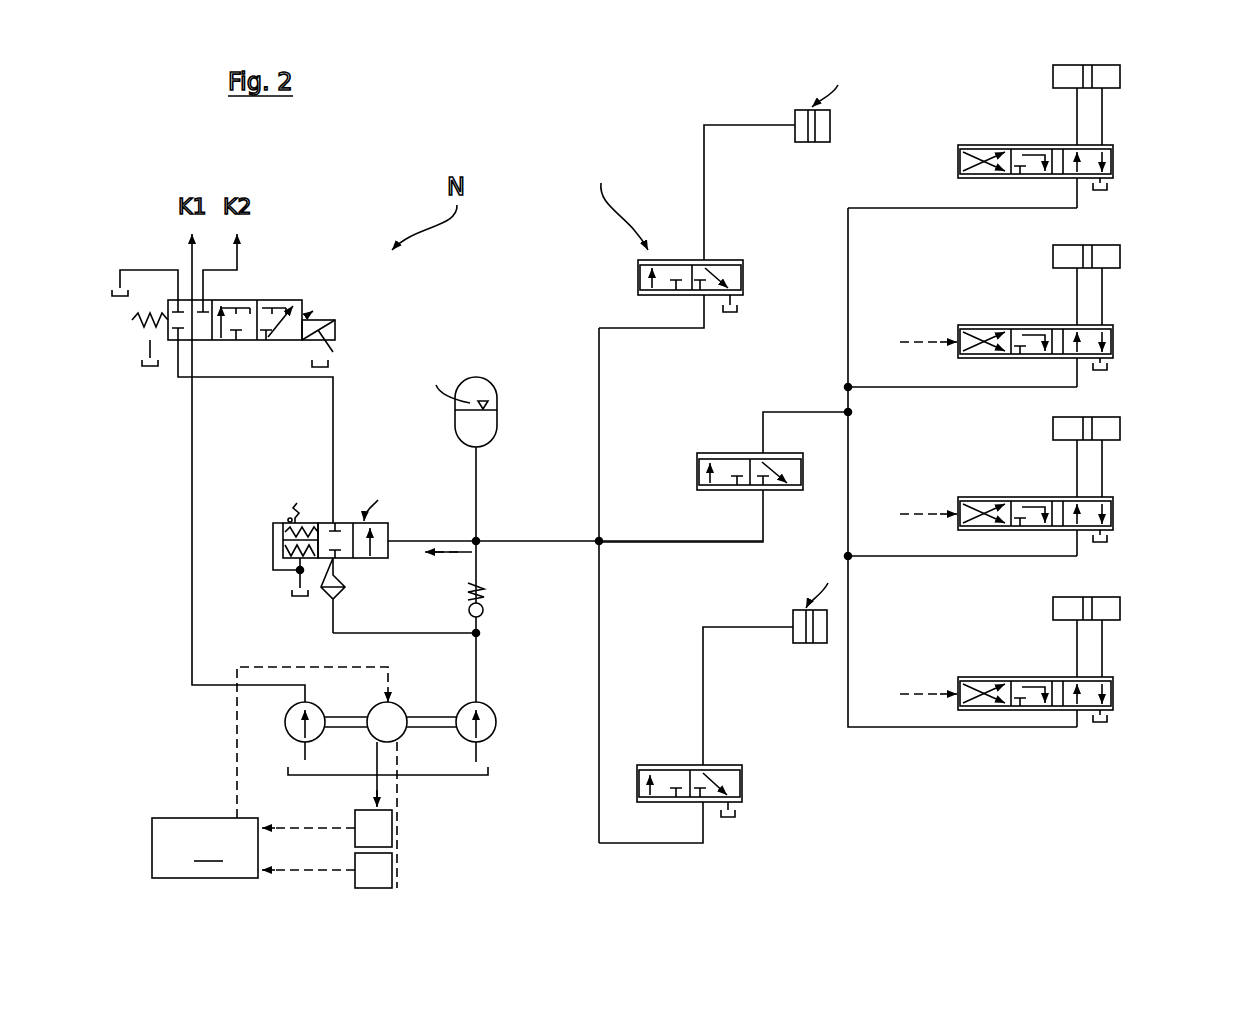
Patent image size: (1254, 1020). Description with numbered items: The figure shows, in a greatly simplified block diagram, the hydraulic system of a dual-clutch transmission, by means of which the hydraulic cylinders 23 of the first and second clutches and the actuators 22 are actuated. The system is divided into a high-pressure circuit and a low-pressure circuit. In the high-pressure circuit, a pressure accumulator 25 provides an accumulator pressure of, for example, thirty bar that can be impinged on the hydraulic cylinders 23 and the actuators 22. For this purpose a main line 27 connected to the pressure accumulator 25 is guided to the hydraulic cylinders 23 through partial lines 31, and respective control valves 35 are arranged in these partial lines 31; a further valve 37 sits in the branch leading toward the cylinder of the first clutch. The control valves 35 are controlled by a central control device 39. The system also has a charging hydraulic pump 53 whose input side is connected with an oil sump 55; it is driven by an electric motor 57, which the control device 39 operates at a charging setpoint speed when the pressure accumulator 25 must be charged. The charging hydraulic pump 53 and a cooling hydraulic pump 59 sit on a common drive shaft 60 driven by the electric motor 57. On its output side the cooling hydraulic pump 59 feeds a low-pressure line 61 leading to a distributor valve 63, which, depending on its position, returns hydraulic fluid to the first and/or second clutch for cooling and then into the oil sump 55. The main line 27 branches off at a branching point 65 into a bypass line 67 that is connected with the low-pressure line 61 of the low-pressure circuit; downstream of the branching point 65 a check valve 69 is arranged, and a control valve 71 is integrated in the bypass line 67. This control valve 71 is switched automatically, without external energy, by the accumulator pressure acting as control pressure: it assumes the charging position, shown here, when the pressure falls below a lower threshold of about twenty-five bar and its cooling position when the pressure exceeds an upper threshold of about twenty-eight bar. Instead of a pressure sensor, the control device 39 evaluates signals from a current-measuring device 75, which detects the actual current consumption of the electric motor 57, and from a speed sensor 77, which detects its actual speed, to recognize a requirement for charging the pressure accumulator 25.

The actuators 22 is at (1130, 77).
The hydraulic cylinders 23 is at (1108, 88).
The pressure accumulator 25 is at (477, 377).
The main line 27 is at (476, 475).
The partial lines 31 is at (921, 208).
The control valves 35 is at (1113, 162).
The directional control valve 37 is at (728, 263).
The control device 39 is at (270, 772).
The charging hydraulic pump 53 is at (498, 715).
The oil sump 55 is at (488, 770).
The electric motor 57 is at (398, 706).
The cooling hydraulic pump 59 is at (288, 715).
The common drive shaft 60 is at (437, 730).
The low-pressure line 61 is at (193, 510).
The distributor valve 63 is at (268, 304).
The branching point 65 is at (480, 634).
The bypass line 67 is at (437, 632).
The check valve 69 is at (485, 592).
The control valve 71 is at (375, 559).
The current-measuring device 75 is at (390, 823).
The speed sensor 77 is at (380, 886).